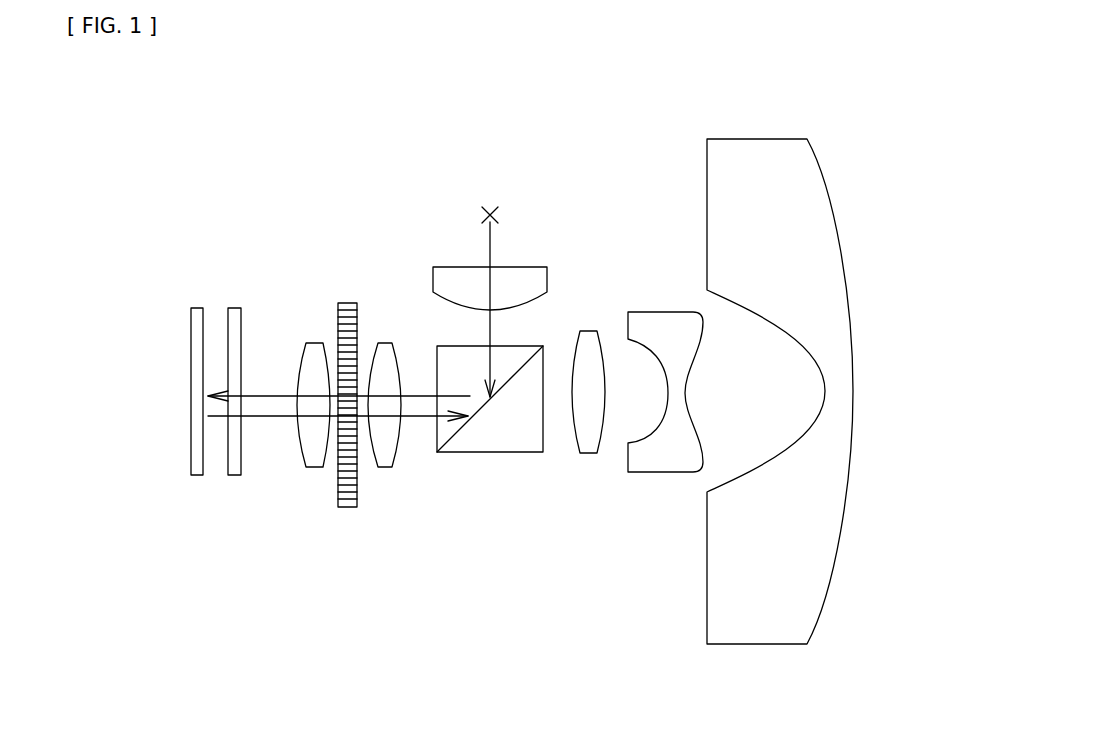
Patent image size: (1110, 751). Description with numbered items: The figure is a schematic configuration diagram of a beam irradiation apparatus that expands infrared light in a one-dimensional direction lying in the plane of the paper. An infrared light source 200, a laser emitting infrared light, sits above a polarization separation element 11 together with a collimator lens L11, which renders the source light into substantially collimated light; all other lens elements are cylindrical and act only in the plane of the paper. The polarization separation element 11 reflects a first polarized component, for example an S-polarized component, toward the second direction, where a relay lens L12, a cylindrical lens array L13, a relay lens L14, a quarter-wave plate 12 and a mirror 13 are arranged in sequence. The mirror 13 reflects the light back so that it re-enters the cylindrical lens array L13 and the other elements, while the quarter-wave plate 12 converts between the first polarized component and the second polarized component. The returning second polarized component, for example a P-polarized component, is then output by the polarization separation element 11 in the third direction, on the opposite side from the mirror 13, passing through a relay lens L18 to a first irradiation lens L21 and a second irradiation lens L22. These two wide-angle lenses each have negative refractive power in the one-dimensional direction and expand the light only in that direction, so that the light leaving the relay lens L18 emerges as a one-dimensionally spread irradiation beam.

The polarization separation element 11 is at (492, 457).
The λ/4 plate 12 is at (232, 302).
The mirror 13 is at (189, 327).
The infrared light source 200 is at (490, 206).
The collimator lens L11 is at (547, 273).
The relay lens L12 is at (383, 350).
The cylindrical lens array L13 is at (350, 493).
The relay lens L14 is at (312, 350).
The relay lens L18 is at (587, 447).
The first irradiation lens L21 is at (658, 315).
The second irradiation lens L22 is at (757, 147).